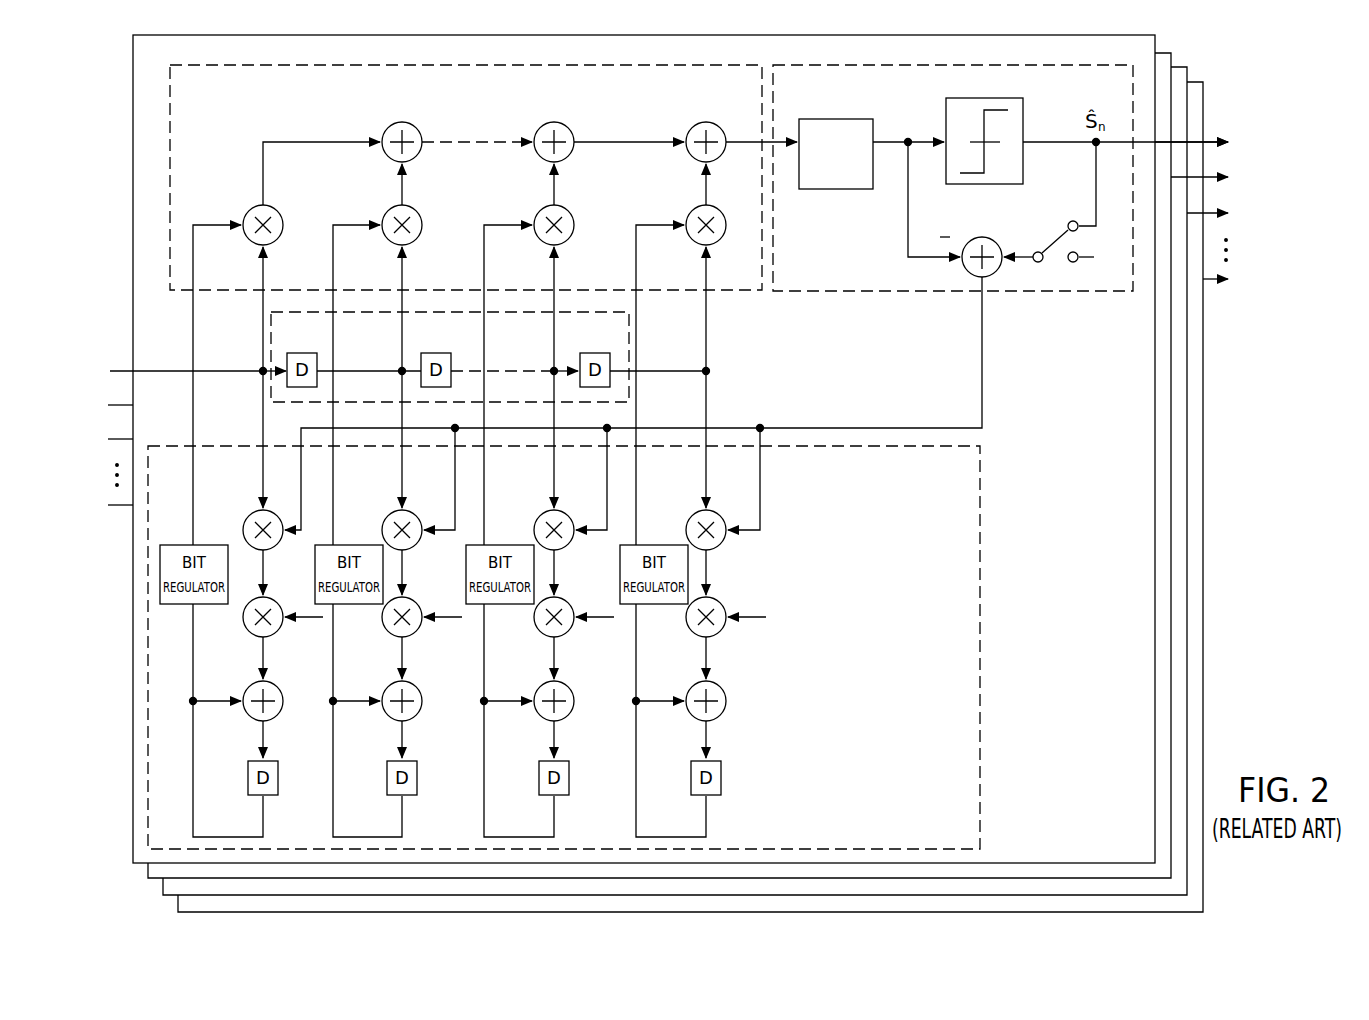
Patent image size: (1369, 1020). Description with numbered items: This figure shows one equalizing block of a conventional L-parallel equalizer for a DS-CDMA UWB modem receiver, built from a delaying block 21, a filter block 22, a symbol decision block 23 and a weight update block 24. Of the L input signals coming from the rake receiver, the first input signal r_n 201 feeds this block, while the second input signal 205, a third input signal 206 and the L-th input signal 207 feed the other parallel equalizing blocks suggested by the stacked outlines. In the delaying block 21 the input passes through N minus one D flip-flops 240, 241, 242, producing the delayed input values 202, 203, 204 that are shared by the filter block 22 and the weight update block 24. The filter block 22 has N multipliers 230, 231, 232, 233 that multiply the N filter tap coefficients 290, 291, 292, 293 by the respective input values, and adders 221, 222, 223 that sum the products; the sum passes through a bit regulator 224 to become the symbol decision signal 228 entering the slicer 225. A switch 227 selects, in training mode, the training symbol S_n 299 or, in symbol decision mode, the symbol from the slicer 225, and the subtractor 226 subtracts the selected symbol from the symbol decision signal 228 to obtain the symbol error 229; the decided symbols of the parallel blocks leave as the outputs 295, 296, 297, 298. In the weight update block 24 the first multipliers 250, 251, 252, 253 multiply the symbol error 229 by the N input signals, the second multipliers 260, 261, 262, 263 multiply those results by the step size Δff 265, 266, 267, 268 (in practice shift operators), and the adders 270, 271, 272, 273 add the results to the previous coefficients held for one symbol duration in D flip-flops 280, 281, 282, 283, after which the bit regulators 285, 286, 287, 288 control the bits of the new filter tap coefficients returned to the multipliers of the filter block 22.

The delaying block 21 is at (590, 404).
The filter block (FB) 22 is at (716, 66).
The symbol decision block 23 is at (1090, 66).
The weight update block (WUB) 24 is at (981, 650).
The first input signal r_n 201 is at (88, 372).
The delayed signal r_n-L 202 is at (365, 340).
The delayed signal r_n-L(N-2) 203 is at (514, 340).
The delayed signal r_n-L(N-1) 204 is at (664, 340).
The second input signal r_n-1 205 is at (78, 408).
The input signal r_n-2 206 is at (78, 442).
The L-th input signal r_n-(L-1) 207 is at (82, 528).
The adder 221 is at (407, 123).
The adder 222 is at (559, 123).
The adder 223 is at (711, 123).
The bit regulator 224 is at (812, 119).
The slicer 225 is at (980, 98).
The subtractor 226 is at (976, 240).
The switch 227 is at (1059, 247).
The filter output y_n,0 228 is at (907, 112).
The symbol error e_n,0 229 is at (1008, 333).
The multiplier 230 is at (266, 206).
The multiplier 231 is at (405, 206).
The multiplier 232 is at (557, 206).
The multiplier 233 is at (709, 206).
The D flip-flop 240 is at (292, 352).
The D flip-flop 241 is at (426, 352).
The D flip-flop 242 is at (585, 352).
The first multiplier 250 is at (255, 513).
The first multiplier 251 is at (410, 513).
The first multiplier 252 is at (562, 513).
The first multiplier 253 is at (714, 513).
The second multiplier 260 is at (254, 635).
The second multiplier 261 is at (393, 635).
The second multiplier 262 is at (545, 635).
The second multiplier 263 is at (697, 635).
The step size input Δff 265 is at (312, 612).
The step size input Δff 266 is at (451, 612).
The step size input Δff 267 is at (603, 612).
The step size input Δff 268 is at (755, 612).
The adder 270 is at (270, 684).
The adder 271 is at (409, 684).
The adder 272 is at (561, 684).
The adder 273 is at (713, 684).
The D flip-flop 280 is at (270, 768).
The D flip-flop 281 is at (409, 768).
The D flip-flop 282 is at (561, 768).
The D flip-flop 283 is at (713, 768).
The bit regulator 285 is at (182, 544).
The bit regulator 286 is at (343, 544).
The bit regulator 287 is at (496, 544).
The bit regulator 288 is at (650, 544).
The coefficient line C_n,0,0 290 is at (196, 478).
The coefficient line C_n,0,1 291 is at (336, 478).
The coefficient line C_n,0,N-2 292 is at (487, 478).
The coefficient line C_n,0,N-1 293 is at (639, 478).
The output Ŝ_n 295 is at (1262, 148).
The output Ŝ_n-1 296 is at (1277, 183).
The output Ŝ_n-2 297 is at (1280, 218).
The output Ŝ_n-(L-1) 298 is at (1297, 285).
The training signal S_n 299 is at (1094, 270).